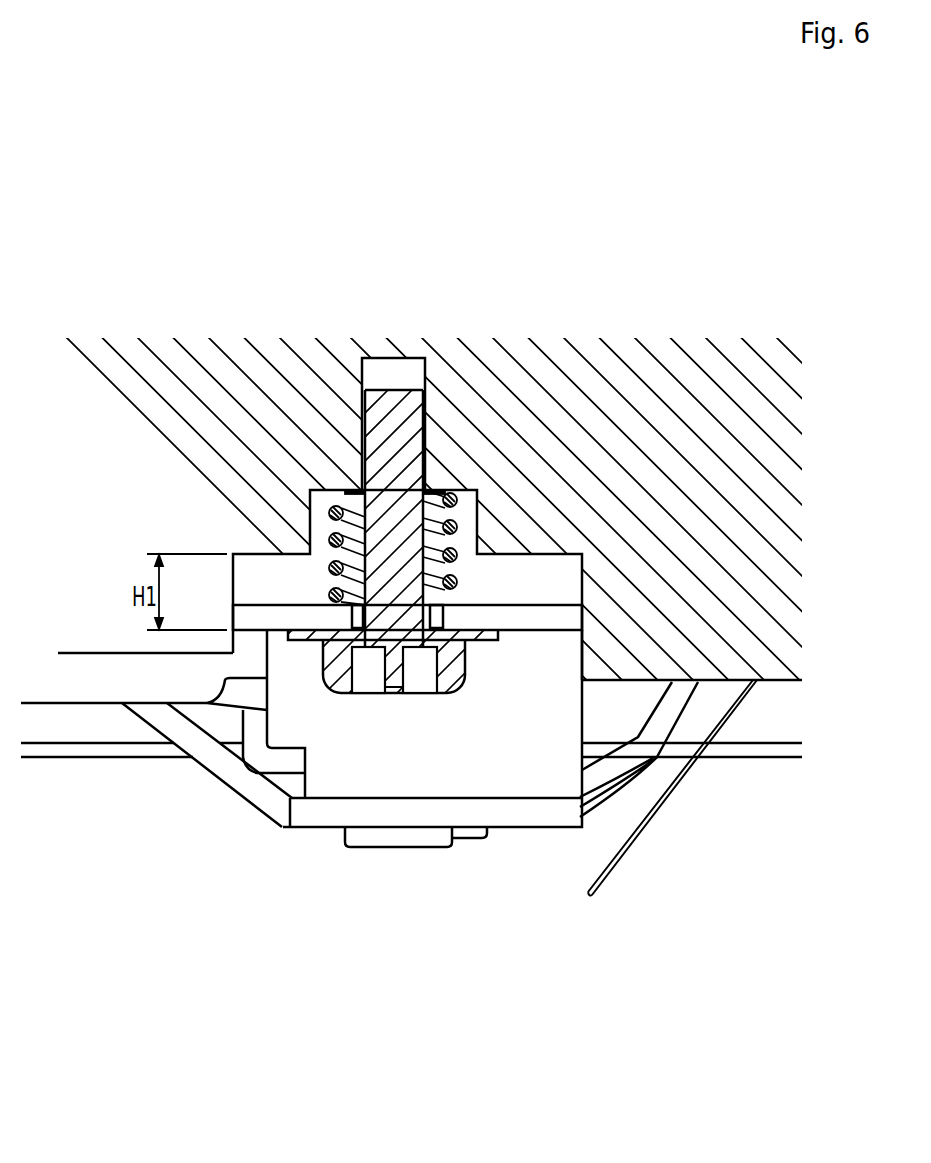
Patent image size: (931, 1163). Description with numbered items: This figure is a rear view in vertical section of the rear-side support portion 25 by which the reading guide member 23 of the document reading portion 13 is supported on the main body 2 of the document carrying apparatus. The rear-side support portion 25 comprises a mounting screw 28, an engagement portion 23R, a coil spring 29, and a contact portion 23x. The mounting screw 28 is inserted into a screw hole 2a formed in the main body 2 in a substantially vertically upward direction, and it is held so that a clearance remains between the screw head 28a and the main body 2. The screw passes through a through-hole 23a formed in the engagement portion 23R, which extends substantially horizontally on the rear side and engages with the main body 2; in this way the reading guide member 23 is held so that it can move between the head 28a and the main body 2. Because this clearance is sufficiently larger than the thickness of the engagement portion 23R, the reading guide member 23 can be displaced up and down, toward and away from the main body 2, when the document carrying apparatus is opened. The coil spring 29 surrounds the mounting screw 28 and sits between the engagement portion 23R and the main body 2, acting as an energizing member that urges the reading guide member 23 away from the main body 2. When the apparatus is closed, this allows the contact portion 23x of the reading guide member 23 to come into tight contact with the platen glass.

The main body 2 is at (689, 372).
The screw hole 2a is at (412, 356).
The rear-side support portion 25 is at (603, 573).
The coil spring 29 is at (457, 525).
The reading guide member 23 is at (542, 838).
The engagement portion 23R is at (542, 622).
The through-hole 23a is at (445, 603).
The contact portion 23x is at (400, 847).
The mounting screw 28 is at (395, 703).
The screw head 28a is at (322, 655).
The document reading portion 13 is at (288, 900).